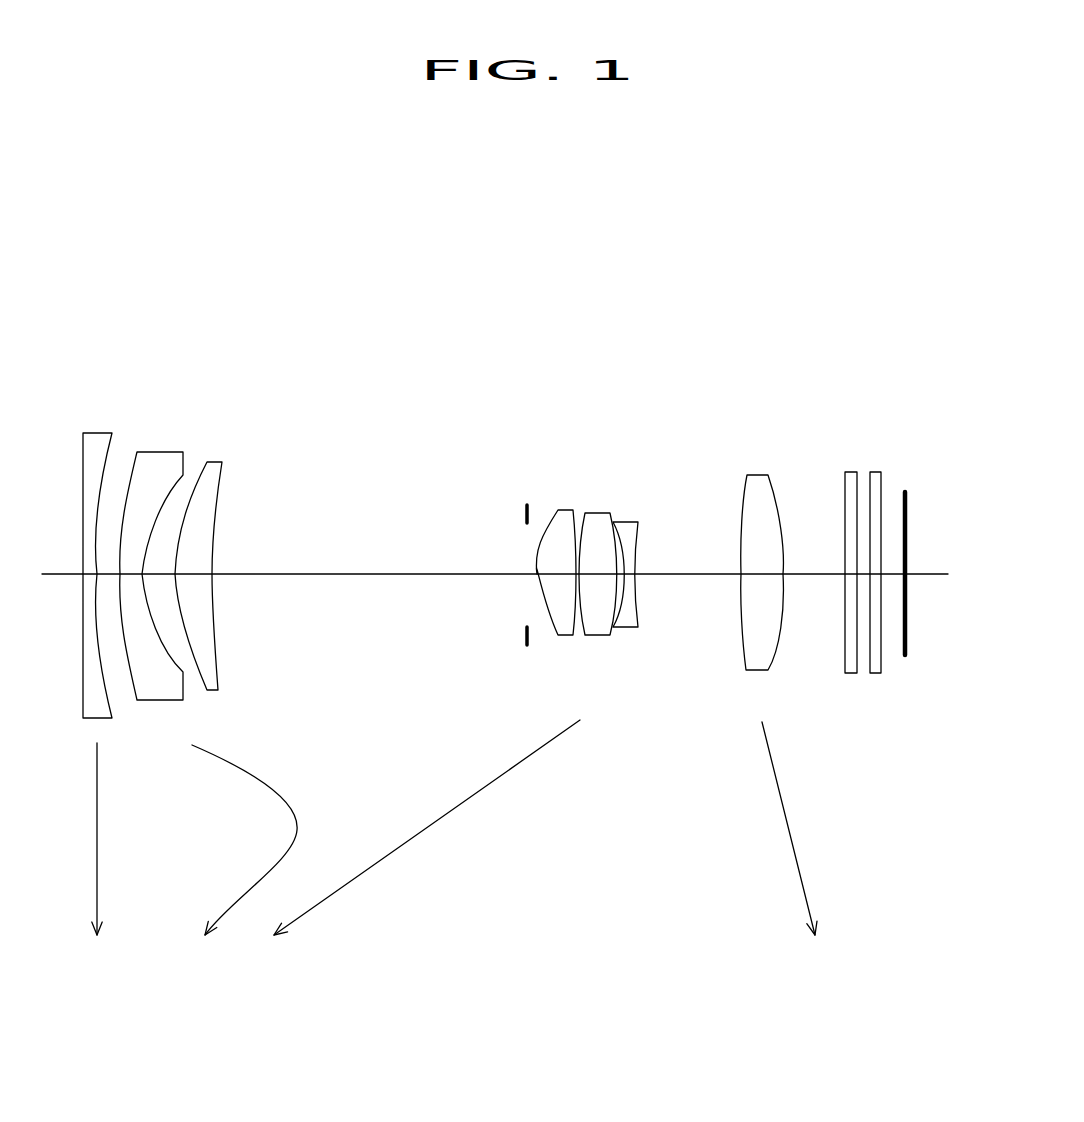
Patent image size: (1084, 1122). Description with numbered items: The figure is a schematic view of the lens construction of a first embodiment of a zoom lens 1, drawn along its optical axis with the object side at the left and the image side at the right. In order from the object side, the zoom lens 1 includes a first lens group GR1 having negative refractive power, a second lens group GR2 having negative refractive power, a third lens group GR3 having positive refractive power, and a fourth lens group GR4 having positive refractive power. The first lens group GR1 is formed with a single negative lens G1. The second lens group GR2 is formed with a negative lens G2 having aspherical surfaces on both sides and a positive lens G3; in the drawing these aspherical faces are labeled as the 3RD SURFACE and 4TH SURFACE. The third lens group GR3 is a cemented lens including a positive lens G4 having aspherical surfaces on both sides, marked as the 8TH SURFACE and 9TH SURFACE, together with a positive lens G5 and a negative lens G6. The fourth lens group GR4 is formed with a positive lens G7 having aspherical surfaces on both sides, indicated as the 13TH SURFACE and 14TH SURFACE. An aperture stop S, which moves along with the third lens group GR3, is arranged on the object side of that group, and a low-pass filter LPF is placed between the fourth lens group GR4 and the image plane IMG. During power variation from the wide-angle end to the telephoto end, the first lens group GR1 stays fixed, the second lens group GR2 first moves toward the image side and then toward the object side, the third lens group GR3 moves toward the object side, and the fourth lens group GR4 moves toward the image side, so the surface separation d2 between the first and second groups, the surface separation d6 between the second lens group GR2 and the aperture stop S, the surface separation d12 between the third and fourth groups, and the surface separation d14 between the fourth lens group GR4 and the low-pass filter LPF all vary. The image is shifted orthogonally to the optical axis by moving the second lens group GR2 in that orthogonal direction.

The zoom lens 1 is at (431, 332).
The first lens group GR1 is at (118, 357).
The second lens group GR2 is at (245, 357).
The third lens group GR3 is at (668, 357).
The fourth lens group GR4 is at (780, 357).
The negative lens G1 is at (95, 433).
The negative lens G2 is at (160, 452).
The positive lens G3 is at (212, 462).
The positive lens G4 is at (565, 510).
The positive lens G5 is at (600, 513).
The negative lens G6 is at (628, 522).
The positive lens G7 is at (757, 475).
The aperture stop S is at (522, 512).
The low-pass filter LPF is at (876, 472).
The image plane IMG is at (912, 508).
The surface separation d2 is at (107, 585).
The surface separation d6 is at (355, 562).
The surface separation d12 is at (700, 562).
The surface separation d14 is at (812, 560).
The third lens surface 3RD SURFACE is at (130, 686).
The fourth lens surface 4TH SURFACE is at (172, 662).
The eighth lens surface 8TH SURFACE is at (550, 630).
The ninth lens surface 9TH SURFACE is at (576, 637).
The thirteenth lens surface 13TH SURFACE is at (744, 648).
The fourteenth lens surface 14TH SURFACE is at (775, 643).